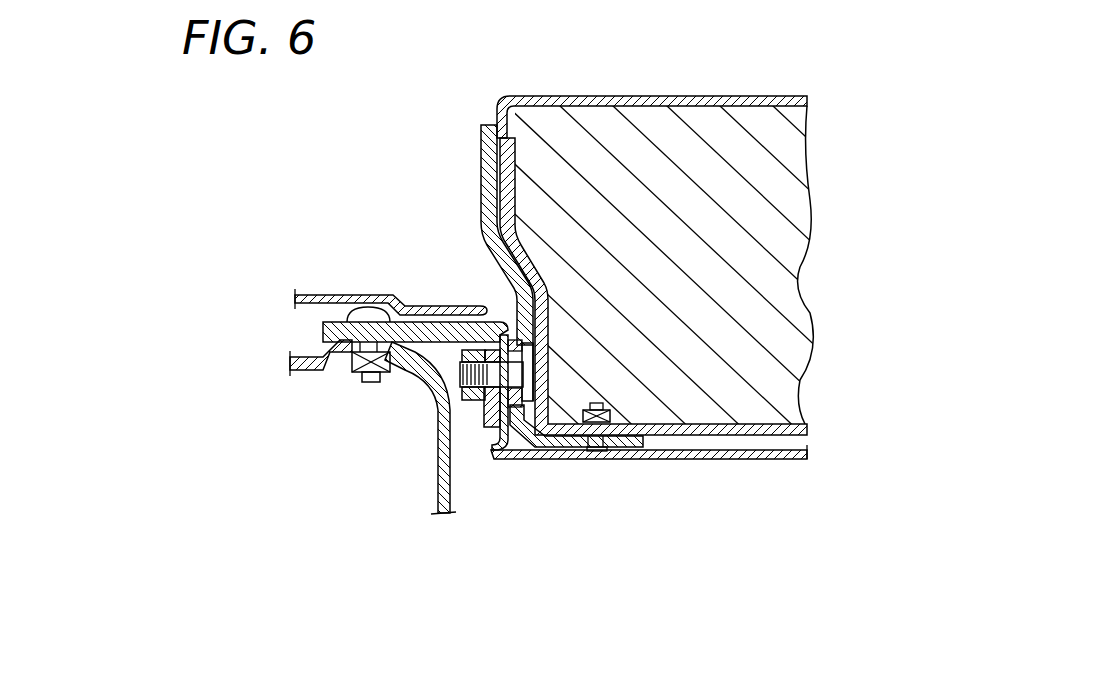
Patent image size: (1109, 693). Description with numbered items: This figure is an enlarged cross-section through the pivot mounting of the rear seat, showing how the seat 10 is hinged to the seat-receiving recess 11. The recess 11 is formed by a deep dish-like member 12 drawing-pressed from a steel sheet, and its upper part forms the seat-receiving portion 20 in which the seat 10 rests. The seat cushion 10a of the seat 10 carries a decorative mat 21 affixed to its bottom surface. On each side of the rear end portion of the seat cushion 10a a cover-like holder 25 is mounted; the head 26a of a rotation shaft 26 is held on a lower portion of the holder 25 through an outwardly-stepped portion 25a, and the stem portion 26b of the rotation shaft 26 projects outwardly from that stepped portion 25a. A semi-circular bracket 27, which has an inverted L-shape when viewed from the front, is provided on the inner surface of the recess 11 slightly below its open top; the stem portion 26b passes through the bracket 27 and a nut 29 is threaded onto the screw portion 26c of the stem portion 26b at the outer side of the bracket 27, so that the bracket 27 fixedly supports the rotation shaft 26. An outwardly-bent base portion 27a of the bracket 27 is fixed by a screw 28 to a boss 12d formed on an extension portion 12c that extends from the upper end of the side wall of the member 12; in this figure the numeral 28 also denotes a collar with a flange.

The seat 10 is at (783, 97).
The seat cushion 10a is at (710, 97).
The seat-receiving recess 11 is at (633, 483).
The deep dish-like member 12 is at (436, 464).
The extension portion 12c is at (307, 373).
The boss 12d is at (400, 298).
The seat-receiving portion 20 is at (537, 473).
The decorative mat 21 is at (728, 460).
The cover-like holder 25 is at (480, 158).
The outwardly-stepped portion 25a is at (507, 330).
The rotation shaft 26 is at (493, 377).
The head 26a is at (522, 398).
The stem portion 26b is at (522, 344).
The screw portion 26c is at (437, 379).
The bracket 27 is at (490, 432).
The outwardly-bent base portion 27a is at (437, 323).
The screw 28 is at (357, 372).
The nut 29 is at (482, 397).